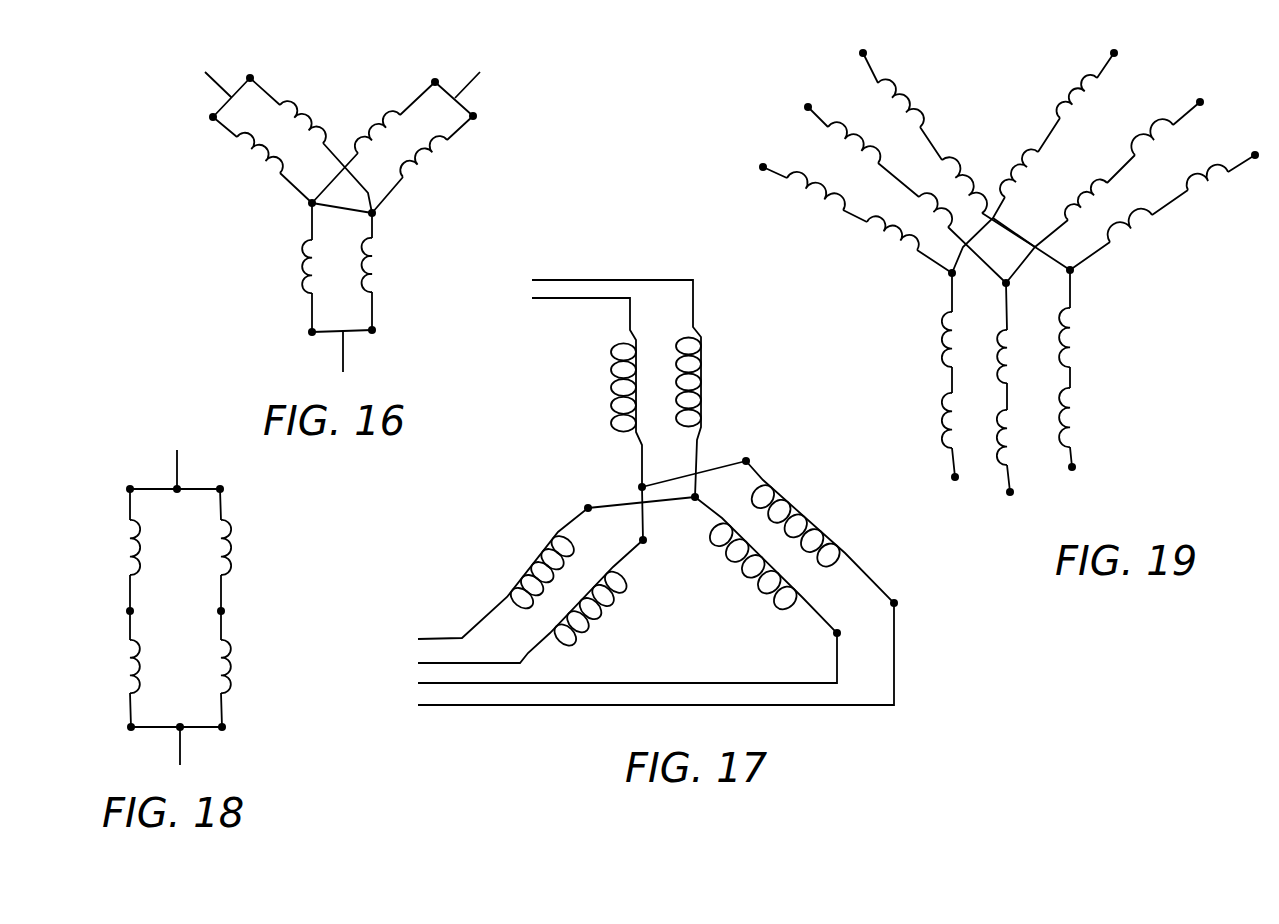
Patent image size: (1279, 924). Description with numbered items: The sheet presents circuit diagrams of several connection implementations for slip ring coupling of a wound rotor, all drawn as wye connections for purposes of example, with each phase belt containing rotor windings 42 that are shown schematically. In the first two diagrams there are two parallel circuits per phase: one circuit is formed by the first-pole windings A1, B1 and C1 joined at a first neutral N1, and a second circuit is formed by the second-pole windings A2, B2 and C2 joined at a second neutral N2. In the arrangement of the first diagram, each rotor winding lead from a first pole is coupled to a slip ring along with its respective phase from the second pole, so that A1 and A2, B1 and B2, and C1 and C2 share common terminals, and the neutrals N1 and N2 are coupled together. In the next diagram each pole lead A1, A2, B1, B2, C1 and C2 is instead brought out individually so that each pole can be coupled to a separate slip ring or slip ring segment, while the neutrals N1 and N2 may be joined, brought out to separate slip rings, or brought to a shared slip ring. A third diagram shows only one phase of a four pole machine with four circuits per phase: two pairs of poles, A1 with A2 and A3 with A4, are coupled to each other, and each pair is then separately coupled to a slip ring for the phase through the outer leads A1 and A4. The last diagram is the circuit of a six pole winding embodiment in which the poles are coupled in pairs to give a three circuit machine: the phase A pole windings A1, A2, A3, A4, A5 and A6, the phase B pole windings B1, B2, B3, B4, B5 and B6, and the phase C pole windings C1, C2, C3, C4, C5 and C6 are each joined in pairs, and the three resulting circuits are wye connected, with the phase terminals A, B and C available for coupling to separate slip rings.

In FIG. 16, the A-phase winding lead A1 is at (252, 137).
In FIG. 17, the A-phase winding lead A1 is at (587, 392).
In FIG. 18, the A-phase winding lead A1 is at (116, 550).
In FIG. 19, the A-phase winding lead A1 is at (813, 192).
In FIG. 16, the A-phase winding lead A2 is at (296, 137).
In FIG. 17, the A-phase winding lead A2 is at (616, 378).
In FIG. 18, the A-phase winding lead A2 is at (116, 669).
In FIG. 19, the A-phase winding lead A2 is at (909, 244).
In FIG. 18, the A-phase winding lead A3 is at (242, 669).
In FIG. 19, the A-phase winding lead A3 is at (872, 159).
In FIG. 18, the A-phase winding lead A4 is at (241, 550).
In FIG. 19, the A-phase winding lead A4 is at (951, 238).
In FIG. 19, the A-phase winding lead A5 is at (900, 104).
In FIG. 19, the A-phase winding lead A6 is at (1006, 210).
In FIG. 19, the phase A terminal A is at (806, 106).
In FIG. 16, the B-phase winding lead B1 is at (396, 133).
In FIG. 17, the B-phase winding lead B1 is at (658, 582).
In FIG. 19, the B-phase winding lead B1 is at (1078, 100).
In FIG. 16, the B-phase winding lead B2 is at (434, 161).
In FIG. 17, the B-phase winding lead B2 is at (629, 591).
In FIG. 19, the B-phase winding lead B2 is at (995, 211).
In FIG. 19, the B-phase winding lead B3 is at (1140, 151).
In FIG. 19, the B-phase winding lead B4 is at (1056, 231).
In FIG. 19, the B-phase winding lead B5 is at (1205, 183).
In FIG. 19, the B-phase winding lead B6 is at (1111, 237).
In FIG. 19, the phase B terminal B is at (1197, 103).
In FIG. 16, the C-phase winding lead C1 is at (325, 344).
In FIG. 17, the C-phase winding lead C1 is at (532, 599).
In FIG. 19, the C-phase winding lead C1 is at (937, 424).
In FIG. 16, the C-phase winding lead C2 is at (361, 349).
In FIG. 17, the C-phase winding lead C2 is at (505, 571).
In FIG. 19, the C-phase winding lead C2 is at (933, 320).
In FIG. 19, the C-phase winding lead C3 is at (990, 437).
In FIG. 19, the C-phase winding lead C4 is at (988, 333).
In FIG. 19, the C-phase winding lead C5 is at (1079, 419).
In FIG. 19, the C-phase winding lead C6 is at (1079, 318).
In FIG. 19, the phase C terminal C is at (1011, 505).
In FIG. 16, the first phase neutral N1 is at (323, 265).
In FIG. 17, the first phase neutral N1 is at (692, 498).
In FIG. 16, the second phase neutral N2 is at (385, 269).
In FIG. 17, the second phase neutral N2 is at (660, 493).
In FIG. 16, the rotor winding 42 is at (420, 157).